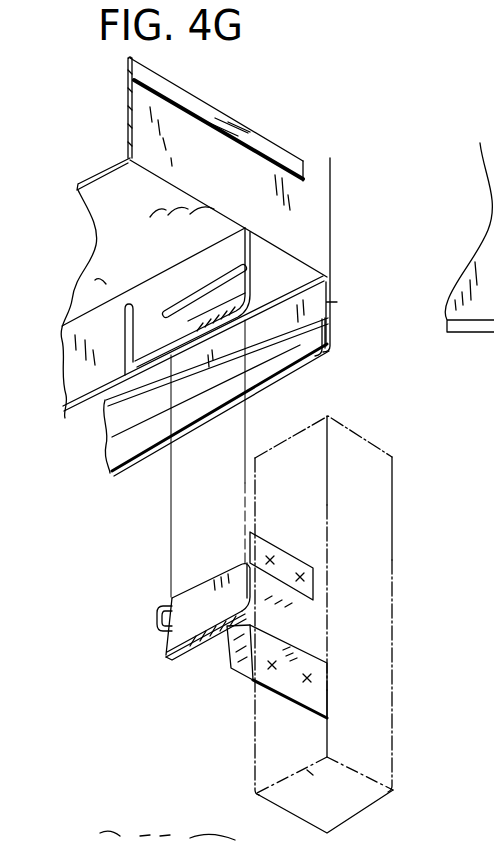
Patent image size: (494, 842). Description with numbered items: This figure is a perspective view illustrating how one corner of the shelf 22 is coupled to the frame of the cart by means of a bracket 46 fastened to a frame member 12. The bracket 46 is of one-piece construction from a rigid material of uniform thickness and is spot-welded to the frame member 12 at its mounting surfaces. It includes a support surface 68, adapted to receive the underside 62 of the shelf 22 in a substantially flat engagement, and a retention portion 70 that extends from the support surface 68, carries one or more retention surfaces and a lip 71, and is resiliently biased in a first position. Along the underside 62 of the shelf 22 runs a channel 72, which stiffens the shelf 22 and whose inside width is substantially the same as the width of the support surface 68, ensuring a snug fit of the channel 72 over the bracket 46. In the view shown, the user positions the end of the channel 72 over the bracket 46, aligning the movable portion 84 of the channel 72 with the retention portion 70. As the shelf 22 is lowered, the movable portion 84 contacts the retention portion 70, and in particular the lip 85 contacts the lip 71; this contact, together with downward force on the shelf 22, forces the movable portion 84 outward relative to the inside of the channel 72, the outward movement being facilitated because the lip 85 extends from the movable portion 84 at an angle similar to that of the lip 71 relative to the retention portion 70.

The bottom shelf 22 is at (319, 208).
The channel 72 is at (325, 302).
The movable portion 84 is at (280, 290).
The lip 85 is at (248, 320).
The frame member 12 is at (390, 460).
The support surface 68 is at (218, 560).
The retention portion 70 is at (172, 595).
The lip 71 is at (165, 652).
The bracket 46 is at (228, 642).
The underside 62 is at (469, 263).